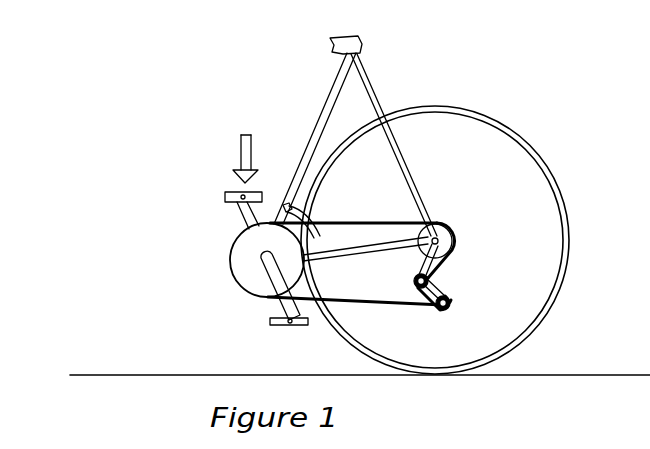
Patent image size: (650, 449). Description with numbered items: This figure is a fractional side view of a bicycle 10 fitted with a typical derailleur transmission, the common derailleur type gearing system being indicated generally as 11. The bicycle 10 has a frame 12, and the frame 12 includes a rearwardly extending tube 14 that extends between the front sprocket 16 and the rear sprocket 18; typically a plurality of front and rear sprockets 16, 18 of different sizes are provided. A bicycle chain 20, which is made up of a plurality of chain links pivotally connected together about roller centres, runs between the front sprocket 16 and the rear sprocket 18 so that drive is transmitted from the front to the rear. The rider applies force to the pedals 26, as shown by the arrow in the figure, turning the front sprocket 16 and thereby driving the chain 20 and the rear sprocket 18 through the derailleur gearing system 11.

The bicycle 10 is at (472, 57).
The derailleur type gearing system 11 is at (222, 271).
The frame 12 is at (304, 117).
The rearwardly extending tube 14 is at (369, 252).
The front sprocket 16 is at (245, 250).
The rear sprocket 18 is at (438, 228).
The bicycle chain 20 is at (370, 307).
The pedals 26 is at (225, 197).